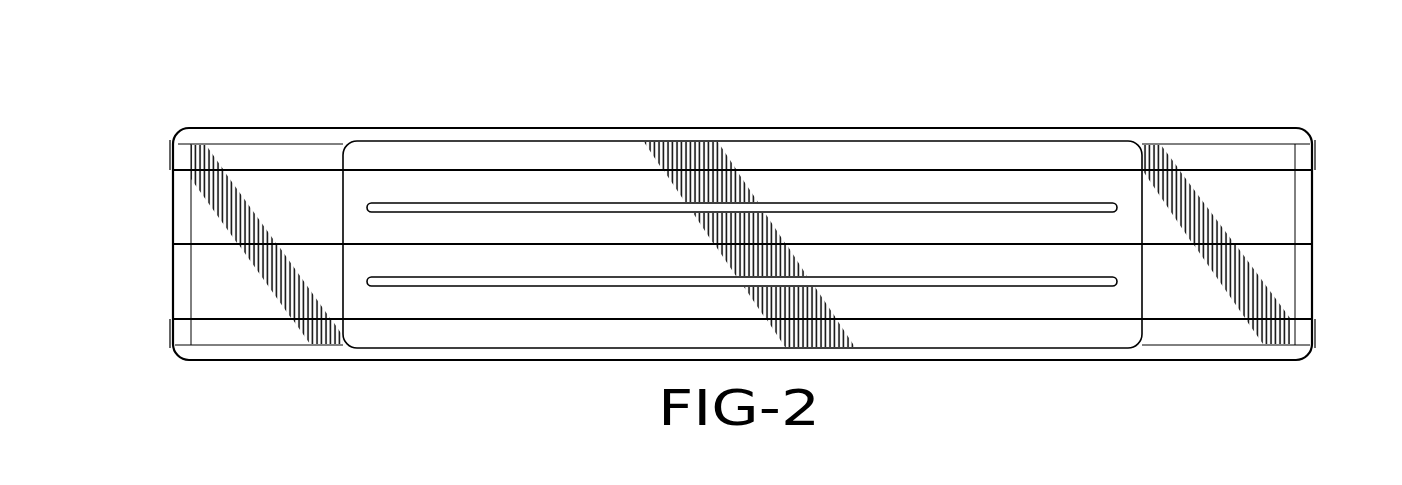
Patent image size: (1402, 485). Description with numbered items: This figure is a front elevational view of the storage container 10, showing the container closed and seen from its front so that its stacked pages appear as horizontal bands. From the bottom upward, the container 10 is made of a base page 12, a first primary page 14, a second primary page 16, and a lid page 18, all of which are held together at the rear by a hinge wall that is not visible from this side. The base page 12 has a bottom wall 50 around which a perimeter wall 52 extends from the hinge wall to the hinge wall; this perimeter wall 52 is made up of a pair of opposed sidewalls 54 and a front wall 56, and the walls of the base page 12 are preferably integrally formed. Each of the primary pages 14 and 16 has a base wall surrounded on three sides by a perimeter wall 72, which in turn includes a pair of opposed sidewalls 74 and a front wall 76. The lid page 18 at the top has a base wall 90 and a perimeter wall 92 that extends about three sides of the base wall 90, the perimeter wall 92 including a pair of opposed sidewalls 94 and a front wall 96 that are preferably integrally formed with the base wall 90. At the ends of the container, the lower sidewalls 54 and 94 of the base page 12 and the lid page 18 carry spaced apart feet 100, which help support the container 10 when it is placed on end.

The storage container 10 is at (976, 105).
The base page 12 is at (511, 362).
The first primary page 14 is at (173, 259).
The second primary page 16 is at (173, 195).
The lid page 18 is at (509, 125).
The bottom wall 50 is at (327, 362).
The perimeter wall 52 is at (1225, 338).
The sidewalls 54 is at (175, 327).
The front wall 56 is at (277, 332).
The perimeter wall 72 is at (1240, 205).
The sidewalls 74 is at (175, 220).
The front wall 76 is at (305, 200).
The base wall 90 is at (223, 127).
The perimeter wall 92 is at (1195, 155).
The sidewalls 94 is at (175, 152).
The front wall 96 is at (267, 157).
The feet 100 is at (171, 142).